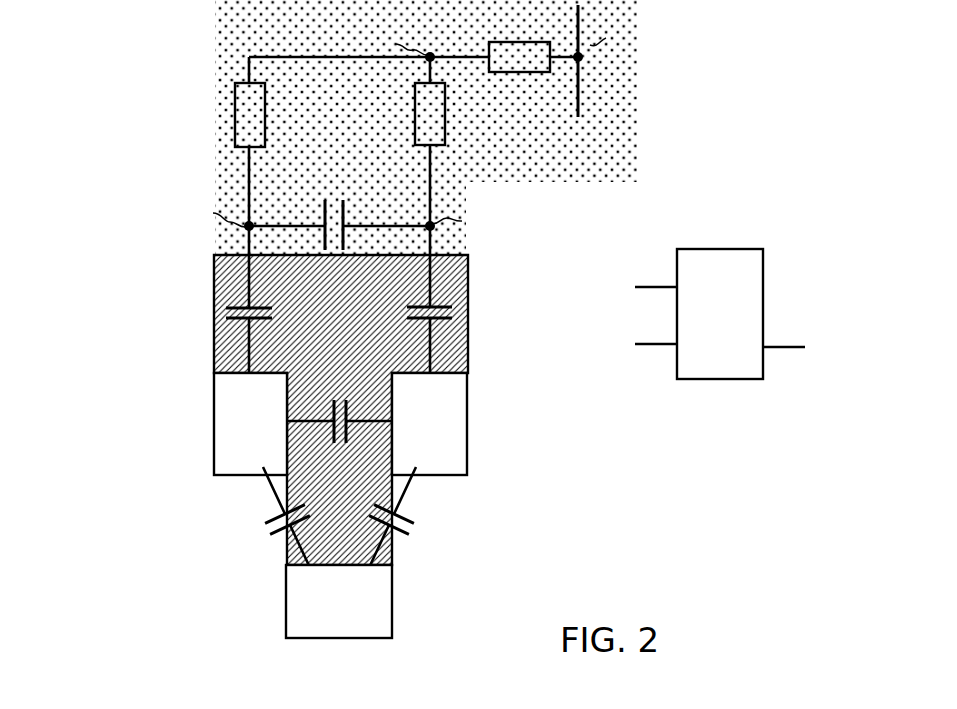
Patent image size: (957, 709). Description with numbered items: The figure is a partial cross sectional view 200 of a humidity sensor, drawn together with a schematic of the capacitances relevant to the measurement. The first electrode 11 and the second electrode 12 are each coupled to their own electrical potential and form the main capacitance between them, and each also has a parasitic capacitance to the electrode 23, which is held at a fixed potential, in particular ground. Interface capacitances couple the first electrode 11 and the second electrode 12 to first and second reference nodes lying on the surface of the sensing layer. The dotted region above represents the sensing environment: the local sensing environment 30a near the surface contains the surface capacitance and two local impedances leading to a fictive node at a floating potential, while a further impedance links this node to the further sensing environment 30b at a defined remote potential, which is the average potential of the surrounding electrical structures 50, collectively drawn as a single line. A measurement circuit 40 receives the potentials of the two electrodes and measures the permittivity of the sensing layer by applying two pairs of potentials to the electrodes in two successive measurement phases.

The first electrode 11 is at (225, 448).
The second electrode 12 is at (450, 462).
The electrode 23 is at (380, 615).
The local sensing environment 30a is at (148, 183).
The further sensing environment 30b is at (148, 3).
The measurement circuit 40 is at (745, 307).
The electrical structures 50 is at (578, 105).
The partial cross sectional view 200 is at (851, 613).